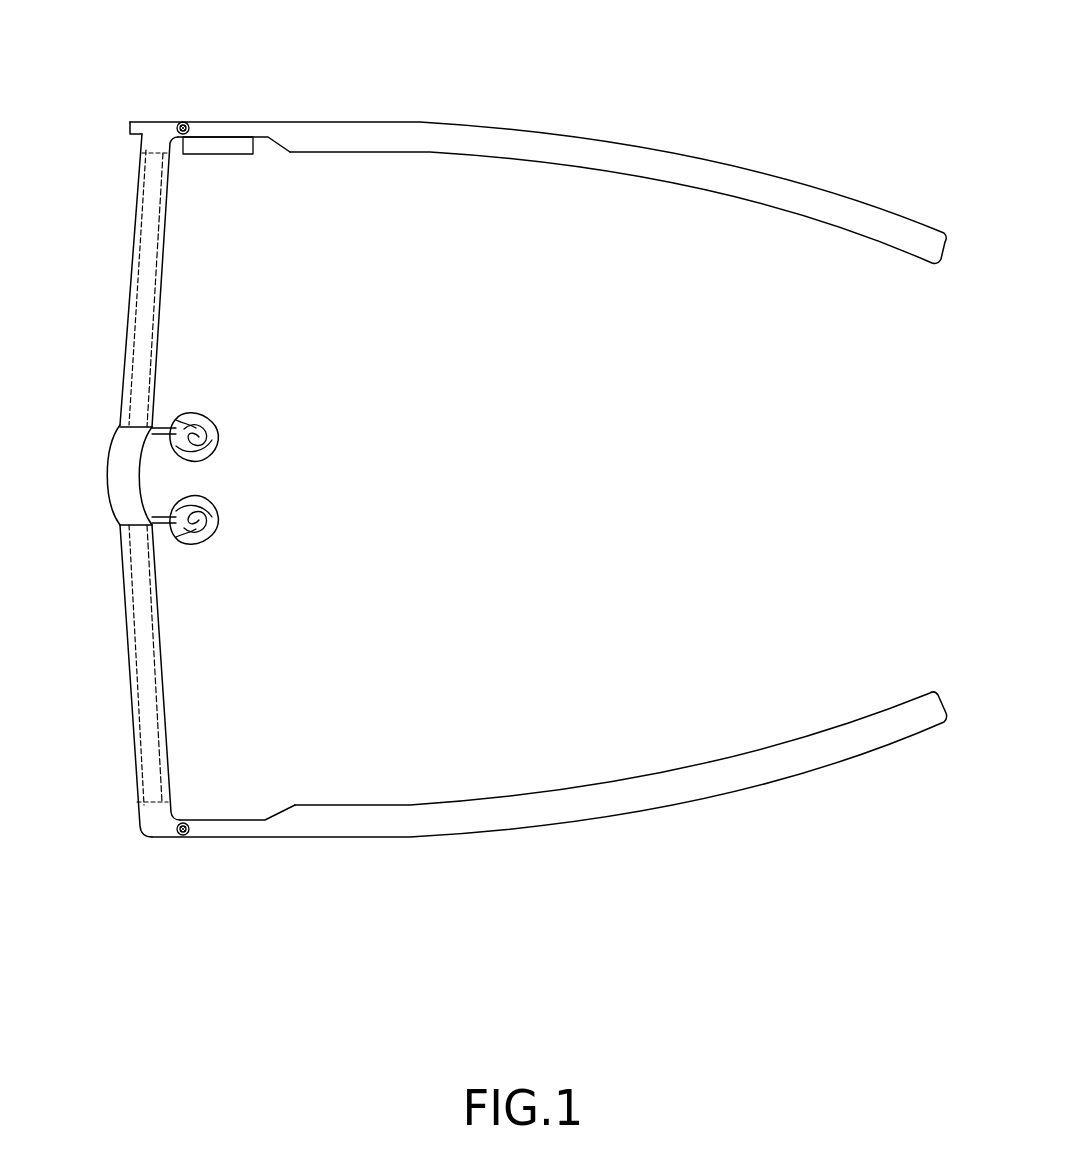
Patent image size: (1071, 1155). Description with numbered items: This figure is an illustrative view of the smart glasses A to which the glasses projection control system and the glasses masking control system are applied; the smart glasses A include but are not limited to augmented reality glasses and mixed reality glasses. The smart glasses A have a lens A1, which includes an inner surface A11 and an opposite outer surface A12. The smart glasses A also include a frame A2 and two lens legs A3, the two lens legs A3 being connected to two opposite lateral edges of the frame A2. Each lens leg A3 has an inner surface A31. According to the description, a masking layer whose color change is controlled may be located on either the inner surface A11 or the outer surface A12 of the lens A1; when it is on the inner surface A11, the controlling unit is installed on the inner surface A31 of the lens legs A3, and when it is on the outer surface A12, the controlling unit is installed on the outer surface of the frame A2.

The smart glasses A is at (266, 72).
The lens A1 is at (143, 212).
The inner surface A11 is at (156, 288).
The outer surface A12 is at (130, 247).
The frame A2 is at (122, 412).
The lens legs A3 is at (600, 150).
The inner surface of the lens legs A31 is at (284, 152).